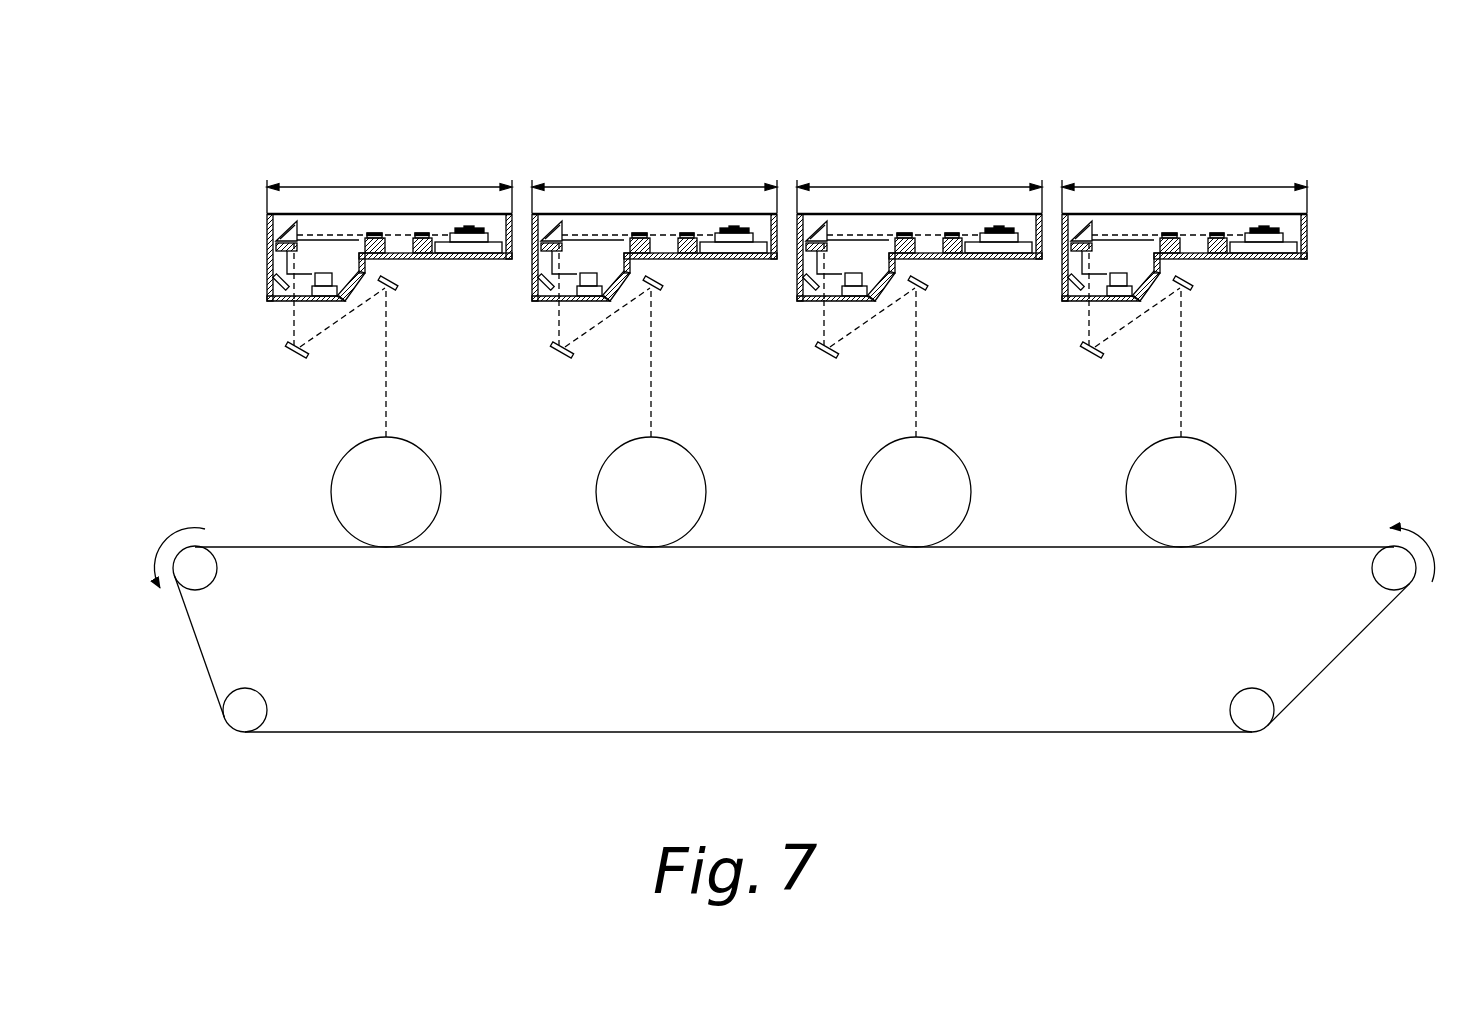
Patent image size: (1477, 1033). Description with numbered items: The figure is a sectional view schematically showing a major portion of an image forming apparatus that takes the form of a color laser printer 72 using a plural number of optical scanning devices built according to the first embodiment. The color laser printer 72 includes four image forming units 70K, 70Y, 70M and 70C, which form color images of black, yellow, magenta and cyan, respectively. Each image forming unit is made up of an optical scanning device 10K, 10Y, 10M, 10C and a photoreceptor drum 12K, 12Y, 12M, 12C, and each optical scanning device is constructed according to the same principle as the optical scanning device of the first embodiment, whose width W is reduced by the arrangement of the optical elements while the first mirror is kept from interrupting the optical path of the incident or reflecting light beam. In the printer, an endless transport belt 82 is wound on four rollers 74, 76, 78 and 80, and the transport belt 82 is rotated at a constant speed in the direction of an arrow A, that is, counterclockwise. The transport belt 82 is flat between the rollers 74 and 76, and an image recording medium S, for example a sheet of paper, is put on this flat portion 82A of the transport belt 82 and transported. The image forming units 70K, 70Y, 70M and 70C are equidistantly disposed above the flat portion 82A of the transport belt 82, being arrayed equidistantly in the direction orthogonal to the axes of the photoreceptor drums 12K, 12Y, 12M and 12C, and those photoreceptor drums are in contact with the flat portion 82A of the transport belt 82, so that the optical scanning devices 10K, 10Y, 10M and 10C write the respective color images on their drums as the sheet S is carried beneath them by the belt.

The color laser printer 72 is at (797, 414).
The image forming unit 70C is at (457, 138).
The image forming unit 70M is at (733, 138).
The image forming unit 70Y is at (1015, 135).
The image forming unit 70K is at (1242, 135).
The optical scanning device 10C is at (418, 310).
The optical scanning device 10M is at (683, 310).
The optical scanning device 10Y is at (948, 310).
The optical scanning device 10K is at (1213, 310).
The photoreceptor drum 12C is at (420, 443).
The photoreceptor drum 12M is at (685, 443).
The photoreceptor drum 12Y is at (950, 443).
The photoreceptor drum 12K is at (1215, 443).
The roller 74 is at (1372, 567).
The roller 76 is at (210, 587).
The roller 78 is at (263, 693).
The roller 80 is at (1230, 703).
The transport belt 82 is at (791, 635).
The flat portion 82A is at (520, 547).
The image recording medium S is at (1281, 545).
The width W is at (392, 187).
The arrow A is at (160, 543).